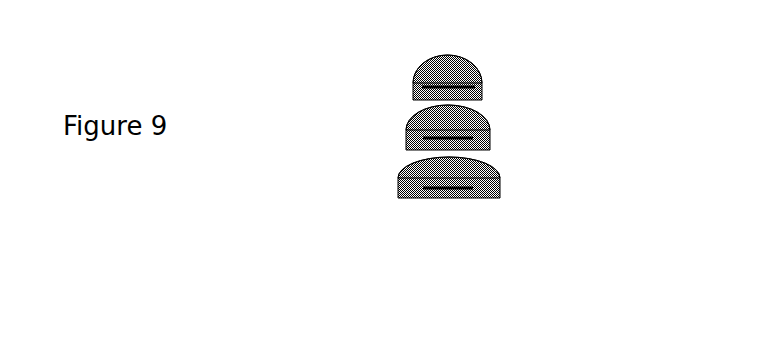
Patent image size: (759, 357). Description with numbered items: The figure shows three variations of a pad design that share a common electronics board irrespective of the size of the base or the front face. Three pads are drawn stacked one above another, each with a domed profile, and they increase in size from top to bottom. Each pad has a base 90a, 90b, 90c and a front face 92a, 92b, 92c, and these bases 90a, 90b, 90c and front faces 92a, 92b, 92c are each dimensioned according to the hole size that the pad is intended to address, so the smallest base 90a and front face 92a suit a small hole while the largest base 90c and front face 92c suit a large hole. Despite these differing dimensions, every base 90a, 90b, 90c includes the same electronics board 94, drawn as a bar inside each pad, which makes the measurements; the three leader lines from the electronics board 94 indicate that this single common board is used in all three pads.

The base 90a is at (407, 80).
The base 90b is at (397, 129).
The base 90c is at (389, 181).
The front face 92a is at (489, 62).
The front face 92b is at (492, 116).
The front face 92c is at (489, 164).
The electronics board 94 is at (434, 99).